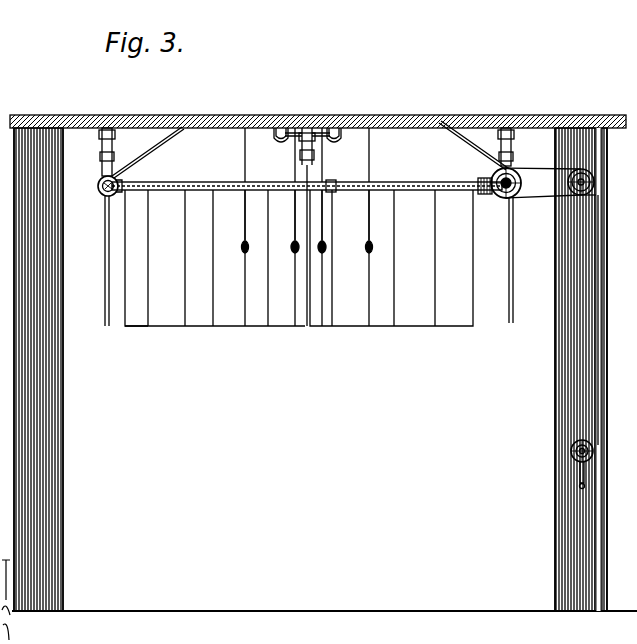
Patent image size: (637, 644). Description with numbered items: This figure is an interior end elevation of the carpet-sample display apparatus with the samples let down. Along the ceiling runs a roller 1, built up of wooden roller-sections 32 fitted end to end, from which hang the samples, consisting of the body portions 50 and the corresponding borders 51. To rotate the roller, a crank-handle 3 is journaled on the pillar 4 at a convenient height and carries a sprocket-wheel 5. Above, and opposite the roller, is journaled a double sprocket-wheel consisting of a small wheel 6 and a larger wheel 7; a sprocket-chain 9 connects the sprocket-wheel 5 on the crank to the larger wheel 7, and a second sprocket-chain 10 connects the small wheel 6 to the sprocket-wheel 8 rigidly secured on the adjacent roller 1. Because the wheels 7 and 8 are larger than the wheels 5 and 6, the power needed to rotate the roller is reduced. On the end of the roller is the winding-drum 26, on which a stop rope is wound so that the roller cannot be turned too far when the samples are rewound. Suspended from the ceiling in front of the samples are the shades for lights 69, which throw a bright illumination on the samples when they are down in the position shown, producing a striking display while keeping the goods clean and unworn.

The roller 1 is at (103, 191).
The crank-handle 3 is at (587, 472).
The pillar 4 is at (601, 150).
The sprocket-wheel 5 is at (591, 446).
The small wheel 6 is at (595, 182).
The larger wheel 7 is at (592, 198).
The sprocket-wheel 8 is at (522, 180).
The sprocket-chain 9 is at (602, 277).
The sprocket-chain 10 is at (528, 168).
The winding-drum 26 is at (485, 195).
The roller-section 32 is at (354, 181).
The body portion 50 is at (173, 328).
The border 51 is at (136, 328).
The shade for lights 69 is at (319, 252).